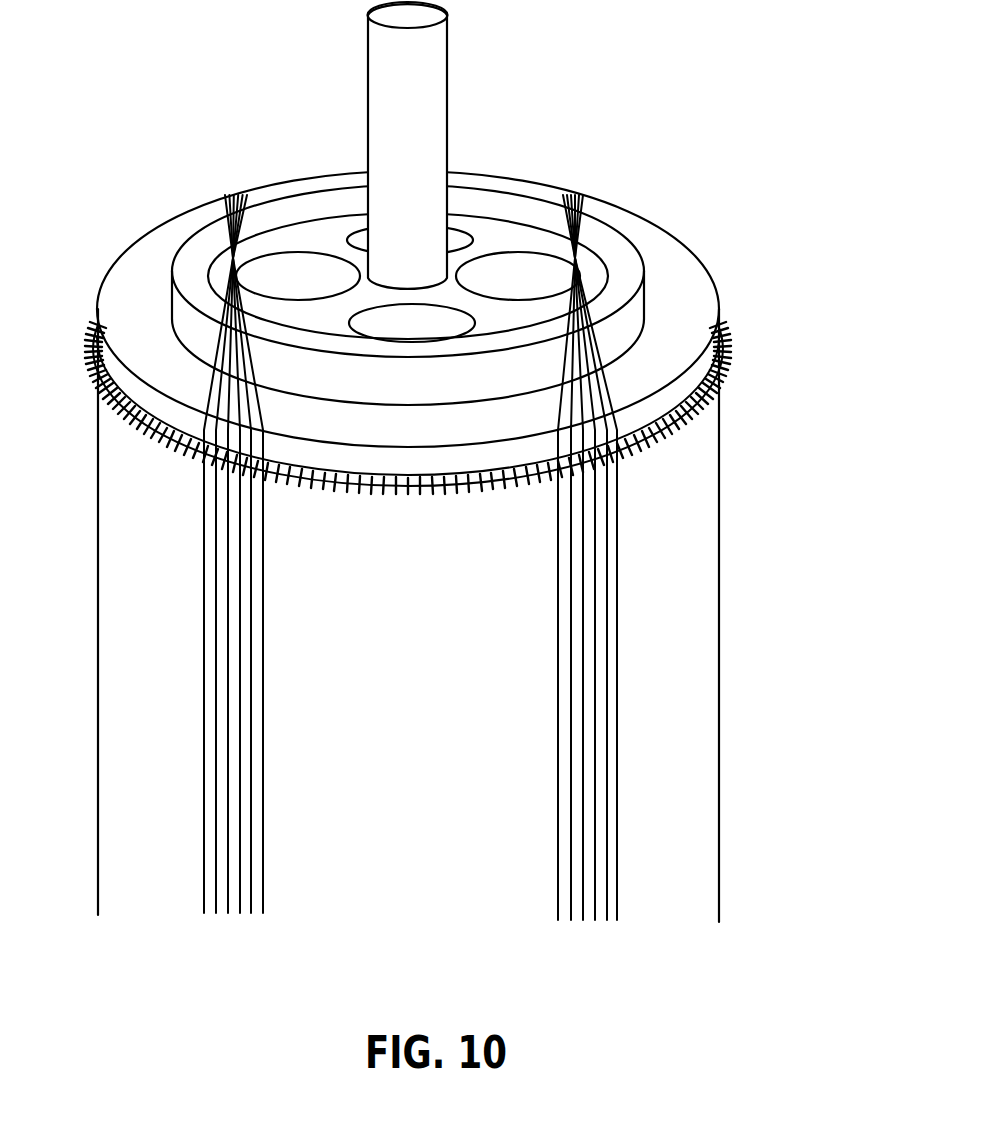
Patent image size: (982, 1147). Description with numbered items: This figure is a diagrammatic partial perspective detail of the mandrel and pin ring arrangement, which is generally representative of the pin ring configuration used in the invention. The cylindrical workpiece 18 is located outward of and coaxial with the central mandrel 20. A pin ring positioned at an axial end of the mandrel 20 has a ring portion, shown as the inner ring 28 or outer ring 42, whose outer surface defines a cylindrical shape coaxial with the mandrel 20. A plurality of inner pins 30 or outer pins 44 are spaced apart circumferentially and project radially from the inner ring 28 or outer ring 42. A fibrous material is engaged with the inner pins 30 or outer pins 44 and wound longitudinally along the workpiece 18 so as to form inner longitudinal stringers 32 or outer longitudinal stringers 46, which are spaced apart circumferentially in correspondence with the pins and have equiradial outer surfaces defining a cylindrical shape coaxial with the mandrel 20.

The cylindrical workpiece 18 is at (127, 470).
The mandrel 20 is at (428, 230).
The inner ring 28 is at (484, 392).
The outer ring 42 is at (732, 342).
The inner pins 30 is at (484, 408).
The outer pins 44 is at (740, 372).
The inner longitudinal stringers 32 is at (518, 557).
The outer longitudinal stringers 46 is at (620, 653).